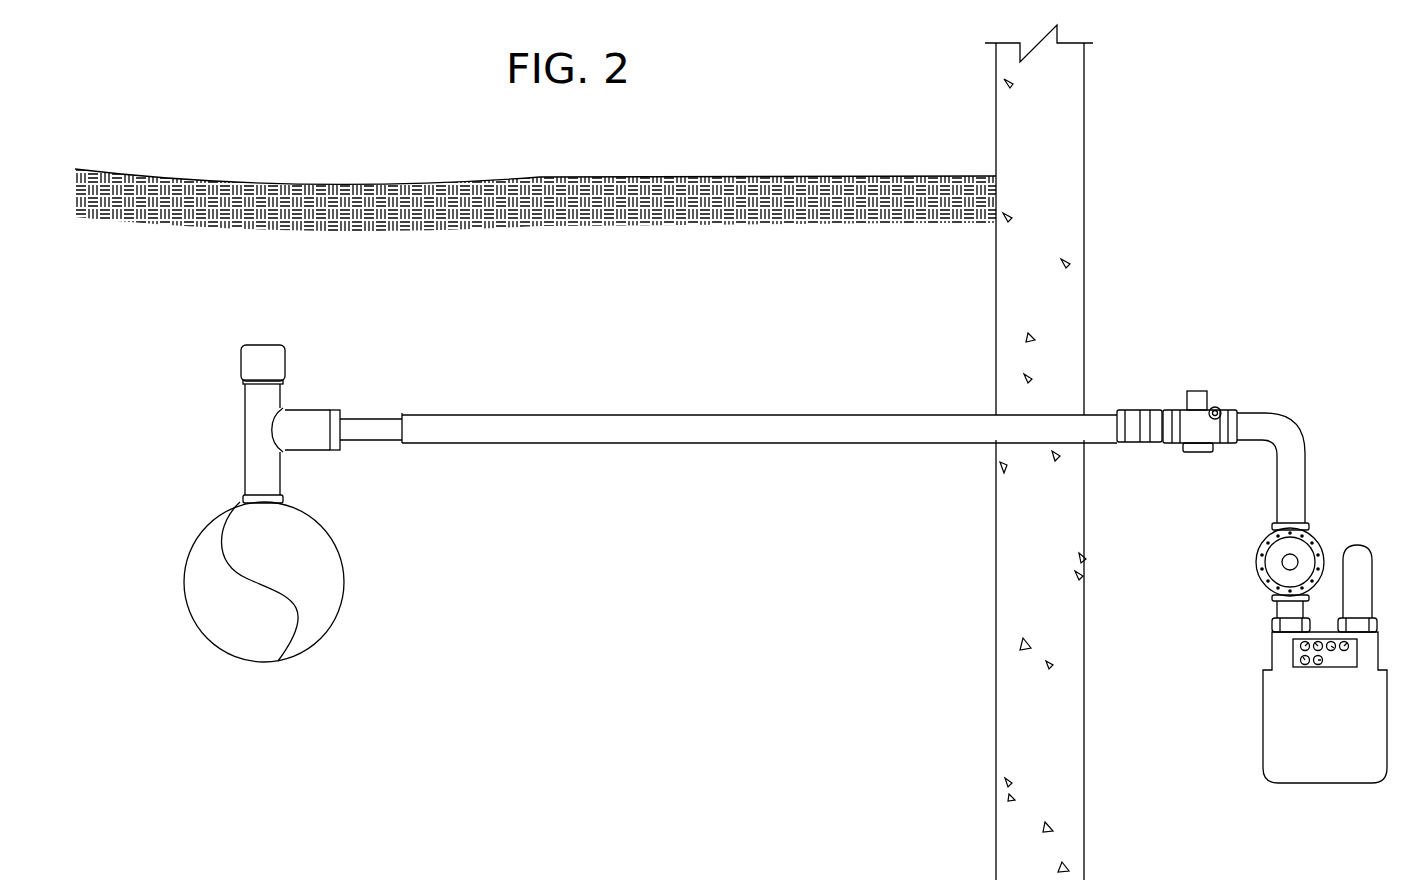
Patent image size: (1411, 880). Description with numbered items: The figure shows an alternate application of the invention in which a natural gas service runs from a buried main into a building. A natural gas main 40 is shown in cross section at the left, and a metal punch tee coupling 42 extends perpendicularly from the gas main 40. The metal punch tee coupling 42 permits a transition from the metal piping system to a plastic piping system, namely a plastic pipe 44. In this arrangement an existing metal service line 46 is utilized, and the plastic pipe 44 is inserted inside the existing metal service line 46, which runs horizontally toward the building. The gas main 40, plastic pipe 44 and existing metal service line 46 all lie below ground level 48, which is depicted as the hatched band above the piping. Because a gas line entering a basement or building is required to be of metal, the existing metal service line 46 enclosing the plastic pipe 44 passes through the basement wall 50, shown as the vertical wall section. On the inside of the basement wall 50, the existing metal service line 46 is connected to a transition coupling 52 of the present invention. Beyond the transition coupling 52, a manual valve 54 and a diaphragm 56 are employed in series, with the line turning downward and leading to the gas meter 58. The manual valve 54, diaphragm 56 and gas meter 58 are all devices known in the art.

The natural gas main 40 is at (328, 557).
The metal punch tee coupling 42 is at (247, 413).
The plastic pipe 44 is at (372, 420).
The existing metal service line 46 is at (568, 418).
The ground level 48 is at (600, 180).
The basement wall 50 is at (1054, 311).
The transition coupling 52 is at (1135, 410).
The manual valve 54 is at (1220, 410).
The diaphragm 56 is at (1258, 563).
The gas meter 58 is at (1277, 727).